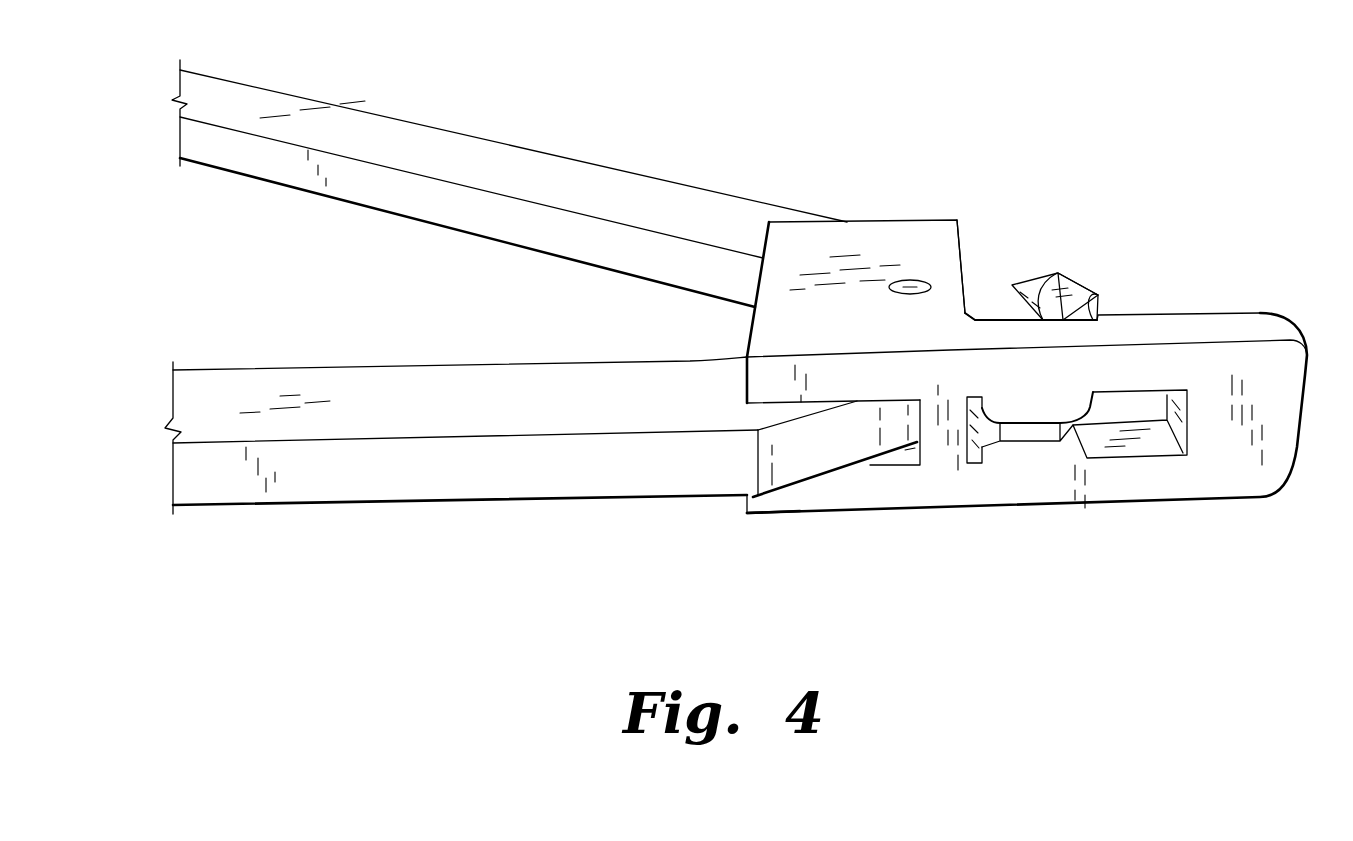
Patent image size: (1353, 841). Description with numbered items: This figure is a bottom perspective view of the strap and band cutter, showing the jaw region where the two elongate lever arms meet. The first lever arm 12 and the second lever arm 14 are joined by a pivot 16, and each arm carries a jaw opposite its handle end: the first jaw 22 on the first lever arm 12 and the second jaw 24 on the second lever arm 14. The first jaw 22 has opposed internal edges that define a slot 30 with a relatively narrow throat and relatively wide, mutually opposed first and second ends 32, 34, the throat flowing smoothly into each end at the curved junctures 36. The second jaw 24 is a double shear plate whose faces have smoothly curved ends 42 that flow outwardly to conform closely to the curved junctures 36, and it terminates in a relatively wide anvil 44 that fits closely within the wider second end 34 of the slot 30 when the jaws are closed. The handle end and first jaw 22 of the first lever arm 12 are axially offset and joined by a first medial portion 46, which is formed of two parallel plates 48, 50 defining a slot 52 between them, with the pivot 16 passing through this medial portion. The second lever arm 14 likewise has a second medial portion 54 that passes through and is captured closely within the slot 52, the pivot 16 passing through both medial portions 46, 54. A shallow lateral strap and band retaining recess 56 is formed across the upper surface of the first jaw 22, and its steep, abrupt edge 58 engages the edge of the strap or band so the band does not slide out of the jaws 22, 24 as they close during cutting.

The first lever arm 12 is at (417, 122).
The second lever arm 14 is at (353, 505).
The pivot 16 is at (912, 280).
The first jaw 22 is at (1137, 505).
The second jaw 24 is at (987, 303).
The slot 30 is at (1037, 437).
The first end of slot 32 is at (967, 465).
The second end of slot 34 is at (1187, 437).
The curved junctures 36 is at (1078, 398).
The curved ends of second jaw faces 42 is at (1000, 290).
The anvil 44 is at (1083, 283).
The first medial portion 46 is at (747, 320).
The first parallel plate 48 is at (747, 387).
The second parallel plate 50 is at (770, 513).
The slot of first medial portion 52 is at (893, 457).
The second medial portion 54 is at (822, 460).
The strap and band retaining recess 56 is at (1057, 283).
The abrupt edge of recess 58 is at (973, 310).